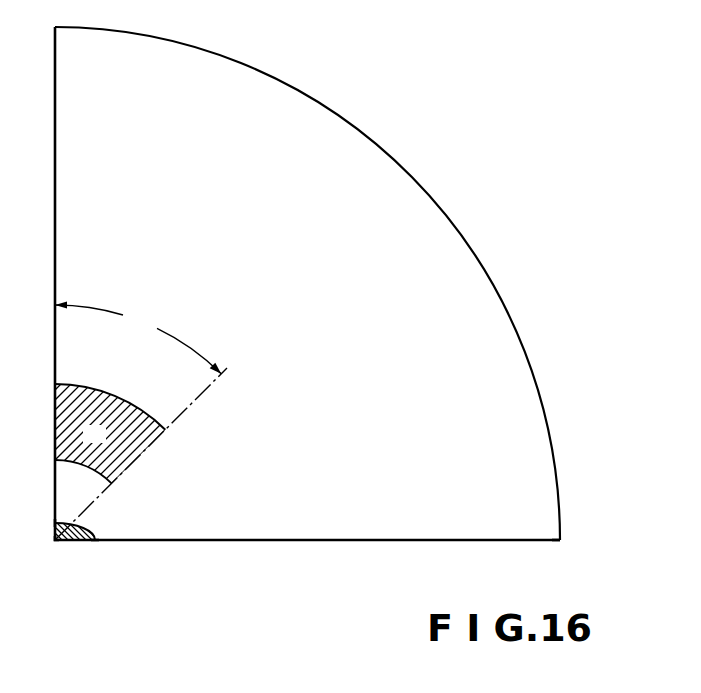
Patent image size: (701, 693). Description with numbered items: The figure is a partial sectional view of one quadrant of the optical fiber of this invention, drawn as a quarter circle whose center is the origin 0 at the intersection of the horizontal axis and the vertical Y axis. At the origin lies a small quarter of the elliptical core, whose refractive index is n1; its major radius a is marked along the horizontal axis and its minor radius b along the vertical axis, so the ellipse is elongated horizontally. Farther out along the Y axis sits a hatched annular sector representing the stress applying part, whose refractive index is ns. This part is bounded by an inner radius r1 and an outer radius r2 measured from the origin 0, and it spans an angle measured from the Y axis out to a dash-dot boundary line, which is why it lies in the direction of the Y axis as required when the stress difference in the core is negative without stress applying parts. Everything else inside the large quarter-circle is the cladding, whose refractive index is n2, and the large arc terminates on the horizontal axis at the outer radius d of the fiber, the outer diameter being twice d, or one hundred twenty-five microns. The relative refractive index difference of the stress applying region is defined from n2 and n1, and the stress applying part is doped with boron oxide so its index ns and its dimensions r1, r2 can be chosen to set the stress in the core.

The cladding refractive index n2 is at (307, 283).
The refractive index of the stress applying part ns is at (297, 297).
The refractive index of the core n1 is at (70, 526).
The inner radius of the stress applying part r1 is at (72, 463).
The outer radius of the stress applying part r2 is at (99, 398).
The major radius of the ellipse a is at (96, 552).
The minor radius of the ellipse b is at (47, 516).
The outer radius of the optical fiber d is at (560, 554).
The origin 0 is at (50, 550).